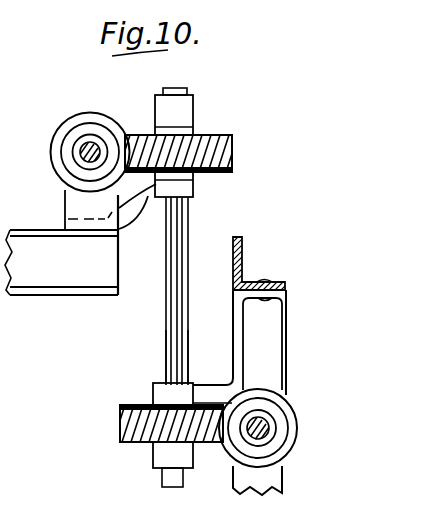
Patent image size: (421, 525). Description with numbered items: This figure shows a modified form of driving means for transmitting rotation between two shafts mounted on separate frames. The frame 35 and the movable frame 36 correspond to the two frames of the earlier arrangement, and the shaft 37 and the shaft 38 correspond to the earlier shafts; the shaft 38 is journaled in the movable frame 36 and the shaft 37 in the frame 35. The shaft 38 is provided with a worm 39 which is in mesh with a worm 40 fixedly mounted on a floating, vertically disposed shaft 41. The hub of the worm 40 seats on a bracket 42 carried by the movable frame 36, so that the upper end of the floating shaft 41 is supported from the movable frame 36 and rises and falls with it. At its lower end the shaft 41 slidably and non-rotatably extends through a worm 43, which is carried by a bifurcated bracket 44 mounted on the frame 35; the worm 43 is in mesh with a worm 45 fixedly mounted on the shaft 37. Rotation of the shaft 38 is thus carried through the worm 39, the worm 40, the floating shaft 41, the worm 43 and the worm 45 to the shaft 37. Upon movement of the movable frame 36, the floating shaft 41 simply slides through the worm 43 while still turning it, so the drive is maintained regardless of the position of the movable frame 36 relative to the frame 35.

The frame 35 is at (243, 262).
The movable frame 36 is at (65, 275).
The shaft 37 is at (262, 432).
The shaft 38 is at (90, 146).
The worm 39 is at (62, 128).
The worm 40 is at (232, 152).
The floating shaft 41 is at (188, 215).
The bracket 42 is at (147, 198).
The worm 43 is at (127, 412).
The bifurcated bracket 44 is at (209, 393).
The worm 45 is at (296, 401).